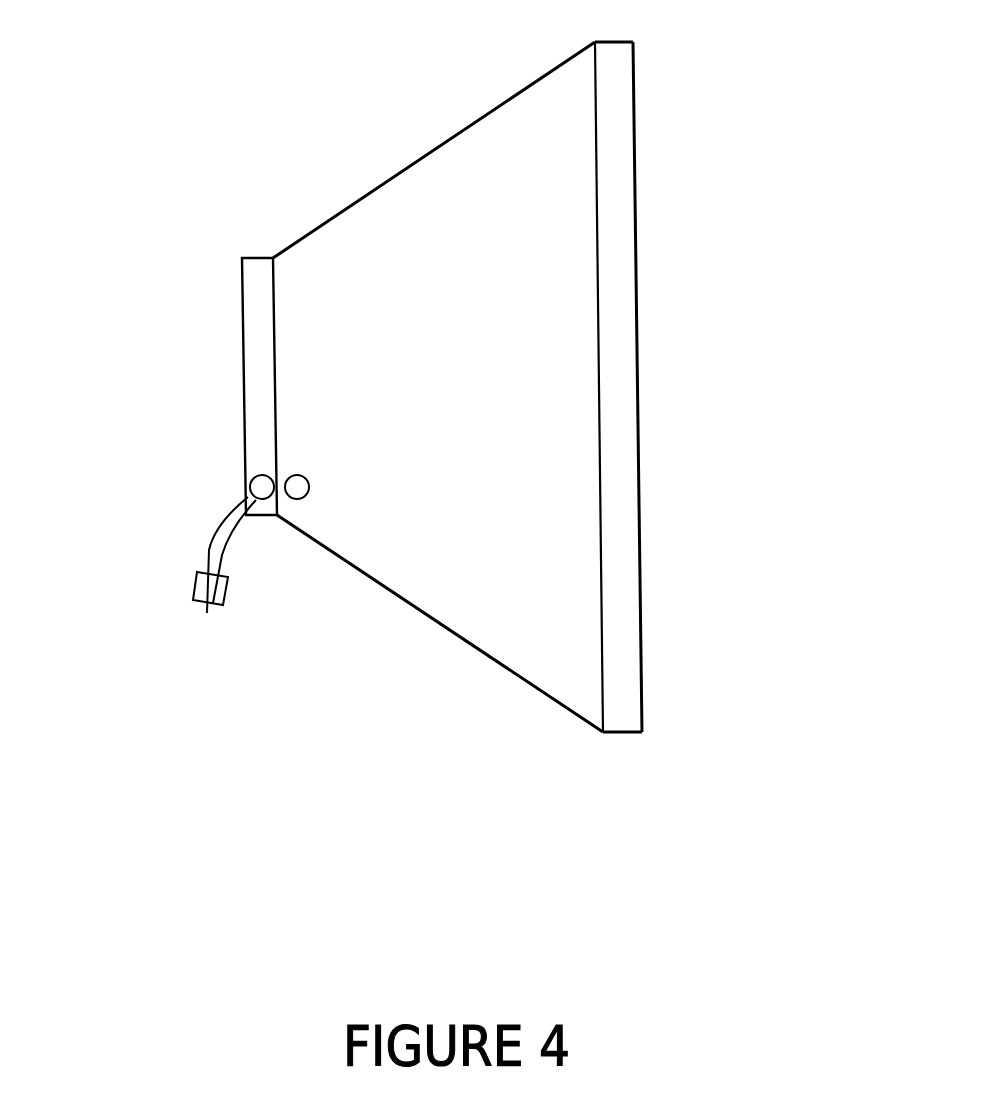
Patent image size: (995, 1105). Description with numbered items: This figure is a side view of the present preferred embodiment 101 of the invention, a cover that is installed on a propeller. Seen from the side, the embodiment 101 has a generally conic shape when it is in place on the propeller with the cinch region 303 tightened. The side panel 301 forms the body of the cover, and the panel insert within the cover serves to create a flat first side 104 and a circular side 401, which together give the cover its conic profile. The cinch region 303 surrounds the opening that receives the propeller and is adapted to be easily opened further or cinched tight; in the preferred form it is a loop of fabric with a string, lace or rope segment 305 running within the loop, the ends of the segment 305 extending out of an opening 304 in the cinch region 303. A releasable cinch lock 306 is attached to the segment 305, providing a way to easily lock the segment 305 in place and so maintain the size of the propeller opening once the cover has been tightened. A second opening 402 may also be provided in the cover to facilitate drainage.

The cover 101 is at (638, 75).
The flat first side 104 is at (643, 390).
The side panel 301 is at (493, 185).
The cinch region 303 is at (260, 390).
The opening in the cinch region 304 is at (249, 484).
The segment 305 is at (200, 545).
The releasable cinch lock 306 is at (195, 578).
The circular side 401 is at (615, 257).
The second opening 402 is at (297, 487).